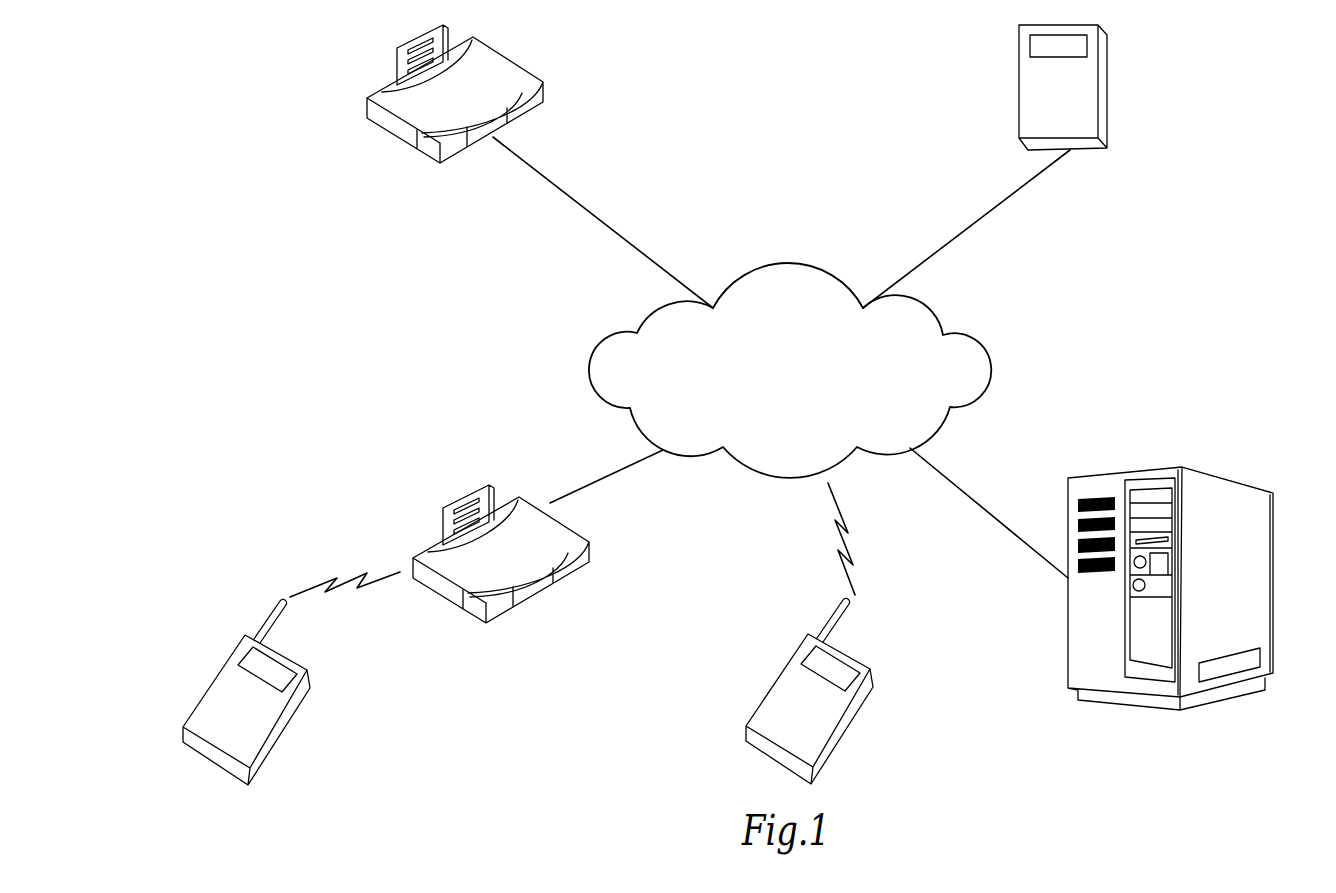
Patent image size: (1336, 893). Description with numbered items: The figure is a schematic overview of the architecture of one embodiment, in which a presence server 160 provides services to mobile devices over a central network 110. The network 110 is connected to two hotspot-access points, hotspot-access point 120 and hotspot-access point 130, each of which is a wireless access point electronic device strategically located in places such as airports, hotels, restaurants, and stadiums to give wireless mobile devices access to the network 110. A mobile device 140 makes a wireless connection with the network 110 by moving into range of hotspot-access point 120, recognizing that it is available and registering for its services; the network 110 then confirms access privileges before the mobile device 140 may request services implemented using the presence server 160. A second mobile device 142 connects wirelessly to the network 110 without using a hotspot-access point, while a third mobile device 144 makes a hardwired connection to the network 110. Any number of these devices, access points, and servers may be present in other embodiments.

The network 110 is at (790, 262).
The hotspot-access point 120 is at (595, 550).
The hotspot-access point 130 is at (545, 90).
The mobile device 140 is at (215, 678).
The mobile device 142 is at (777, 677).
The mobile device 144 is at (1018, 79).
The presence server 160 is at (1277, 580).